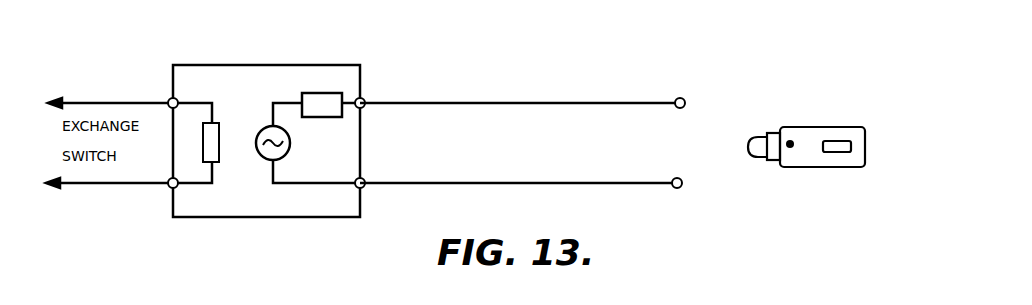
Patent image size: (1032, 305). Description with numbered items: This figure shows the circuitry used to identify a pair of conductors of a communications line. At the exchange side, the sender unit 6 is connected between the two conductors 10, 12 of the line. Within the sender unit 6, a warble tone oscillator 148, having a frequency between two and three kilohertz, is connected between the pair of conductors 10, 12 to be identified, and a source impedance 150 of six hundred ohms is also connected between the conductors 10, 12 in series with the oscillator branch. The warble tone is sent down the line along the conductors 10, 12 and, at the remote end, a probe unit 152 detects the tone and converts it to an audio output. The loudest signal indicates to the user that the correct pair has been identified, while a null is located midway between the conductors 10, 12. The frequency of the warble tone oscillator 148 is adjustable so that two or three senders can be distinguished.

The sender unit 6 is at (170, 67).
The conductor 10 is at (527, 102).
The conductor 12 is at (630, 184).
The warble tone oscillator 148 is at (252, 118).
The source impedance 150 is at (301, 93).
The probe unit 152 is at (847, 167).